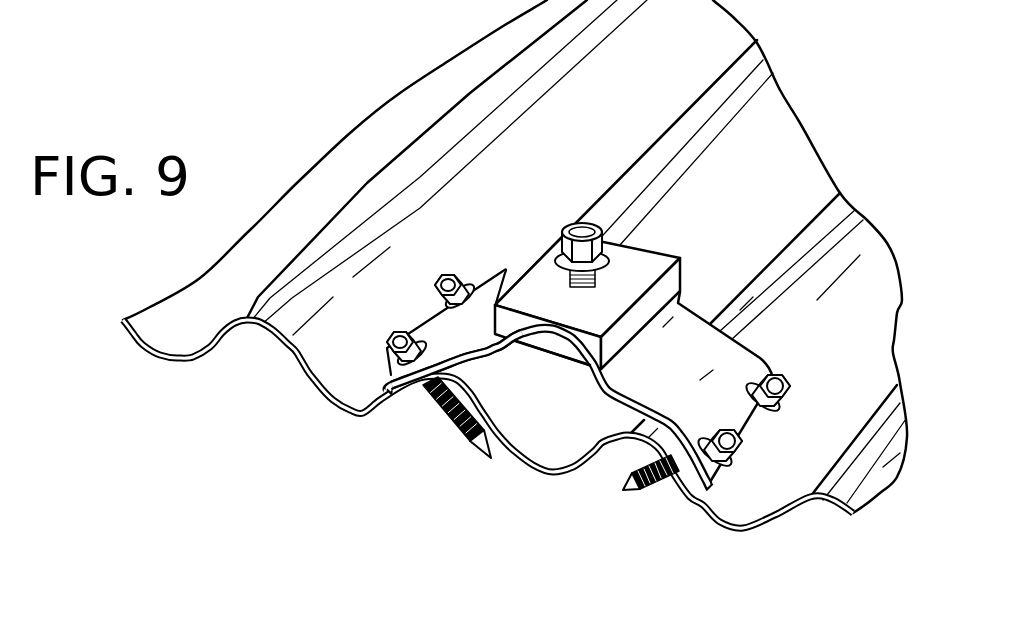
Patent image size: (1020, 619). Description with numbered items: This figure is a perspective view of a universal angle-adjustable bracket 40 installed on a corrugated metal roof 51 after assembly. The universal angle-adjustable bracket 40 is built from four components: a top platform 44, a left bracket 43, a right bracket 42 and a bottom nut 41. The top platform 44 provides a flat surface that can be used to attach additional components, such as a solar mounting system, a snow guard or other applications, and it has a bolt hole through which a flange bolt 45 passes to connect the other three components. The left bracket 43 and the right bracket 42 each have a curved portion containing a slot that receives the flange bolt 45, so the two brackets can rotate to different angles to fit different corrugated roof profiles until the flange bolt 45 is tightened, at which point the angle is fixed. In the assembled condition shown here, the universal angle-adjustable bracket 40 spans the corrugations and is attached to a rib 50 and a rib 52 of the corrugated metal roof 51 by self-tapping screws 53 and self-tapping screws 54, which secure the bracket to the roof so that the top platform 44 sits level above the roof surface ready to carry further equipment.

The universal angle-adjustable bracket 40 is at (617, 365).
The bottom nut 41 is at (568, 366).
The right bracket 42 is at (700, 330).
The left bracket 43 is at (490, 360).
The top platform 44 is at (546, 272).
The flange bolt 45 is at (578, 224).
The rib 50 is at (459, 434).
The corrugated metal roof 51 is at (329, 418).
The rib 52 is at (621, 472).
The self-tapping screws 53 is at (460, 276).
The self-tapping screws 54 is at (742, 460).